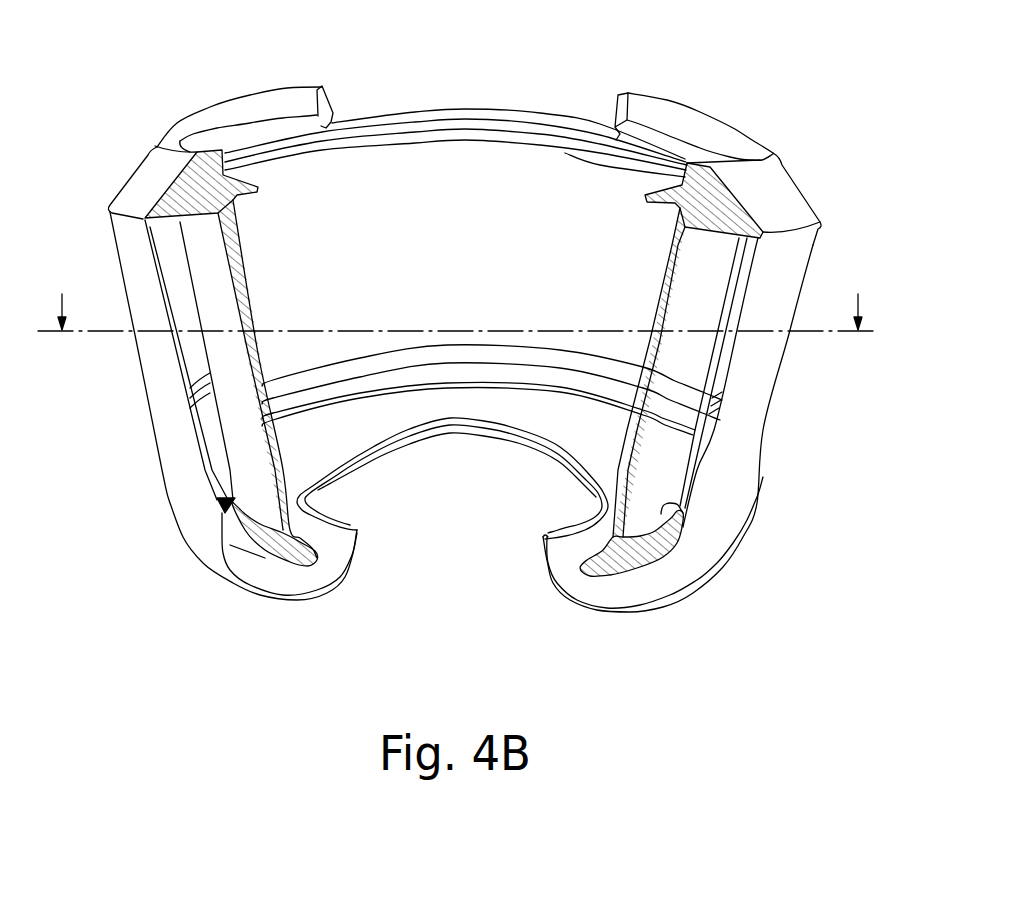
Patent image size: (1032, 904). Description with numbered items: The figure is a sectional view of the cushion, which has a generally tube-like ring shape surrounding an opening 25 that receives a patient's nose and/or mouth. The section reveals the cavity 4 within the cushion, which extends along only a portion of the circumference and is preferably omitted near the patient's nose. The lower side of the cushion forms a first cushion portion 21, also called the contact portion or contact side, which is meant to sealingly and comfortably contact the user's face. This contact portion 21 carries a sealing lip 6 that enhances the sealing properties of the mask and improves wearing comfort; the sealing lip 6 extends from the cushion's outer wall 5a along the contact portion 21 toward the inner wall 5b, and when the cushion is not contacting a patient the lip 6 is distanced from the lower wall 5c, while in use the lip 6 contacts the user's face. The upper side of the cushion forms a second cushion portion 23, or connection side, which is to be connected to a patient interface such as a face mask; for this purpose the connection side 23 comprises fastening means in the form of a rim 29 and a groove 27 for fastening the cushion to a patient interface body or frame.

The second cushion portion 23 is at (730, 60).
The rim 29 is at (230, 123).
The groove 27 is at (293, 123).
The cavity 4 is at (700, 350).
The outer wall 5a is at (717, 438).
The inner wall 5b is at (620, 437).
The lower wall 5c is at (607, 573).
The first cushion portion 21 is at (287, 611).
The sealing lip 6 is at (550, 582).
The opening 25 is at (422, 572).